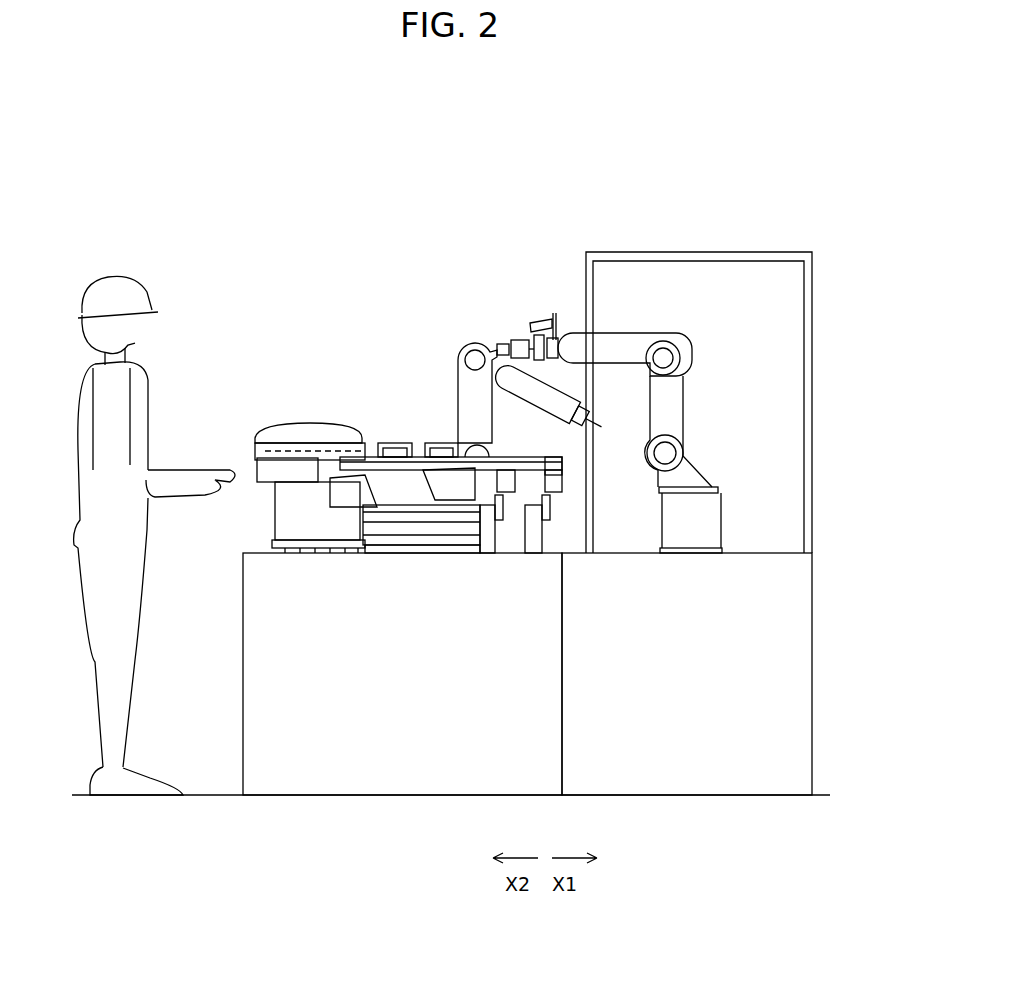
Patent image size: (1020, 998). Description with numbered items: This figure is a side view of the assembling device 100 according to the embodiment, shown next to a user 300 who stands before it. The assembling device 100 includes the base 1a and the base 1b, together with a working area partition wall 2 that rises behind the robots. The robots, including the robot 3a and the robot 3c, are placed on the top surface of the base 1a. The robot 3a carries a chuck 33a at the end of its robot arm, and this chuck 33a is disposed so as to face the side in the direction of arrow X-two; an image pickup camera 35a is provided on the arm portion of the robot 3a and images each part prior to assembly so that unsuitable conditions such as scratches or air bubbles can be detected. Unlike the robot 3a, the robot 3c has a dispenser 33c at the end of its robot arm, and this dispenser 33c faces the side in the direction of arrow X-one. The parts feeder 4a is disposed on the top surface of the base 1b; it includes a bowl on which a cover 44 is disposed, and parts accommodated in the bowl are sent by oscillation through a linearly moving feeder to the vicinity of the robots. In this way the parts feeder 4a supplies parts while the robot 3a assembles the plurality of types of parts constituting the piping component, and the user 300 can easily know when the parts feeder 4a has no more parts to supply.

In FIG. 2, the assembling device 100 is at (666, 188).
In FIG. 2, the working area partition wall 2 is at (718, 252).
The user 300 is at (107, 290).
In FIG. 2, the robot 3a is at (713, 345).
In FIG. 2, the robot 3c is at (458, 334).
In FIG. 2, the chuck 33a is at (508, 342).
In FIG. 2, the image pickup camera 35a is at (548, 318).
In FIG. 2, the dispenser 33c is at (590, 427).
In FIG. 2, the cover 44 is at (300, 430).
In FIG. 2, the parts feeder 4a is at (262, 470).
In FIG. 2, the base 1a is at (762, 552).
In FIG. 2, the base 1b is at (252, 642).